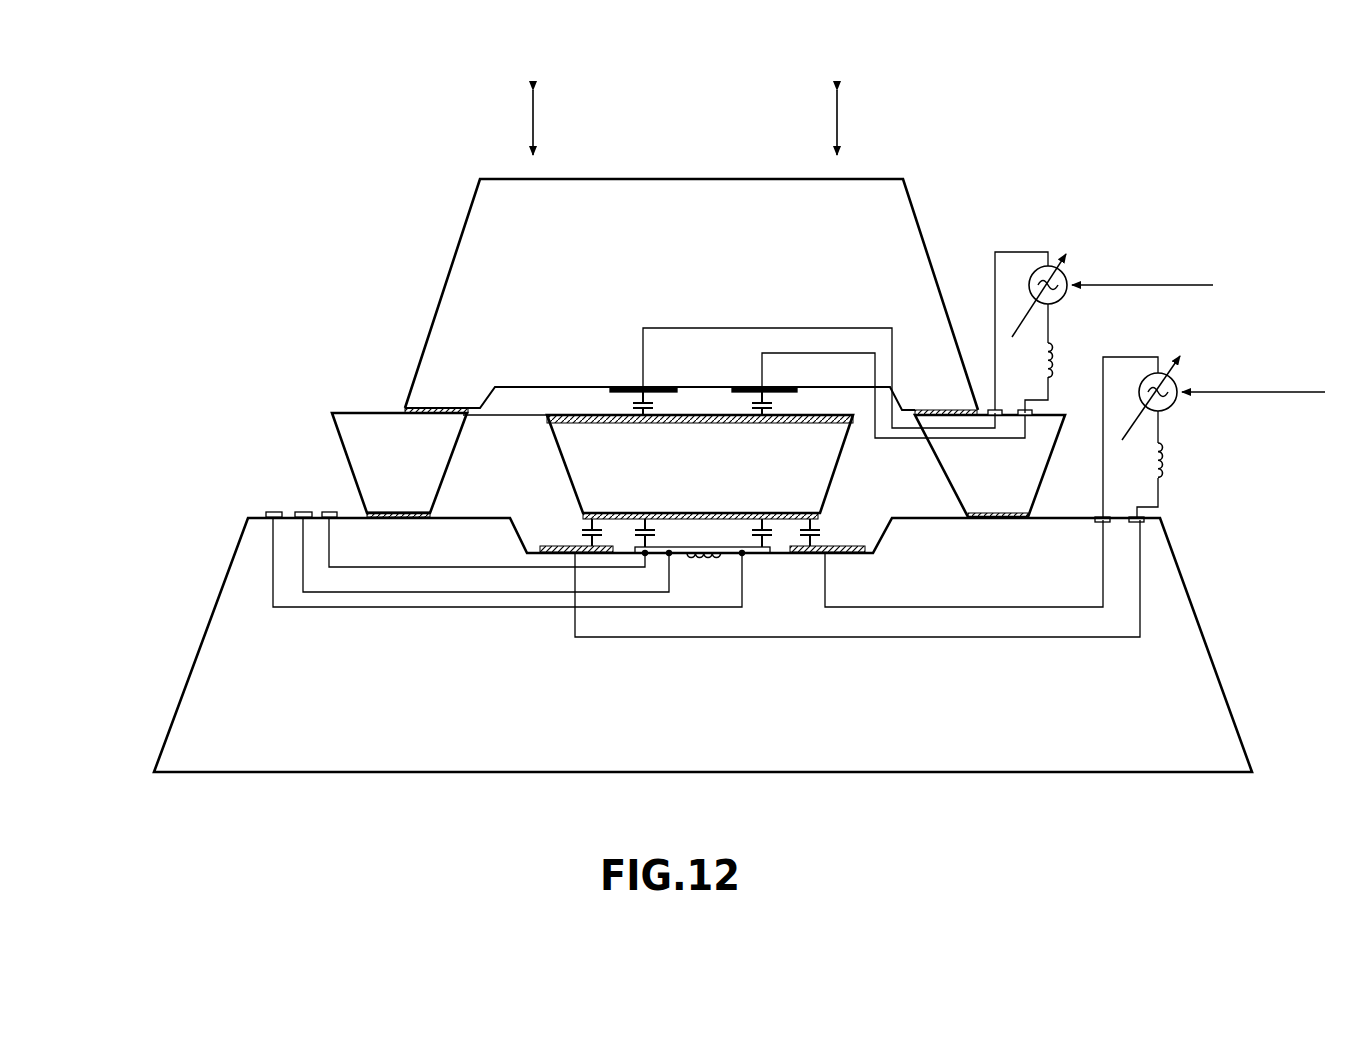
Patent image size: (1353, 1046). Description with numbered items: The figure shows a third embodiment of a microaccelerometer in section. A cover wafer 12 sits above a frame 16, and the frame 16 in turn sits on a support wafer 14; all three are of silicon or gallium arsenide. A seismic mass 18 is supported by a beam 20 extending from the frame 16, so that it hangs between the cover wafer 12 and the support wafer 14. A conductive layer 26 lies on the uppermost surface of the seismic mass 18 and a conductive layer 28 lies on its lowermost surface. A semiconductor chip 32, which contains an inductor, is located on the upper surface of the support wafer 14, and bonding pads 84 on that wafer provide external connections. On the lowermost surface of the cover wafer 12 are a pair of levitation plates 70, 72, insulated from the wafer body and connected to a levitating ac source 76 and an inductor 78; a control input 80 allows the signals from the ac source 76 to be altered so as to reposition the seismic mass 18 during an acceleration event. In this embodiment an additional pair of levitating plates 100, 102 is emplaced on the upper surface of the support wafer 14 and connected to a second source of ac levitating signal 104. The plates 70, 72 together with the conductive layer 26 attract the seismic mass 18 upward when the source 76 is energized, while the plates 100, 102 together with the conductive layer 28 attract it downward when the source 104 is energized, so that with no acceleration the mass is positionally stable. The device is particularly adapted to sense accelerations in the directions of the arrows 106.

The cover wafer 12 is at (706, 270).
The support wafer 14 is at (685, 705).
The frame 16 is at (420, 468).
The seismic mass 18 is at (647, 471).
The beam 20 is at (477, 420).
The conductive layer 26 is at (705, 425).
The conductive layer 28 is at (787, 510).
The semiconductor chip 32 is at (762, 555).
The levitation plate 70 is at (628, 387).
The levitation plate 72 is at (748, 387).
The levitating ac source 76 is at (1036, 268).
The inductor 78 is at (1053, 345).
The control input 80 is at (1150, 285).
The bond pads 84 is at (313, 500).
The levitating plate 100 is at (552, 542).
The levitating plate 102 is at (840, 555).
The second source of ac levitating signal 104 is at (1175, 417).
The arrows 106 is at (828, 118).